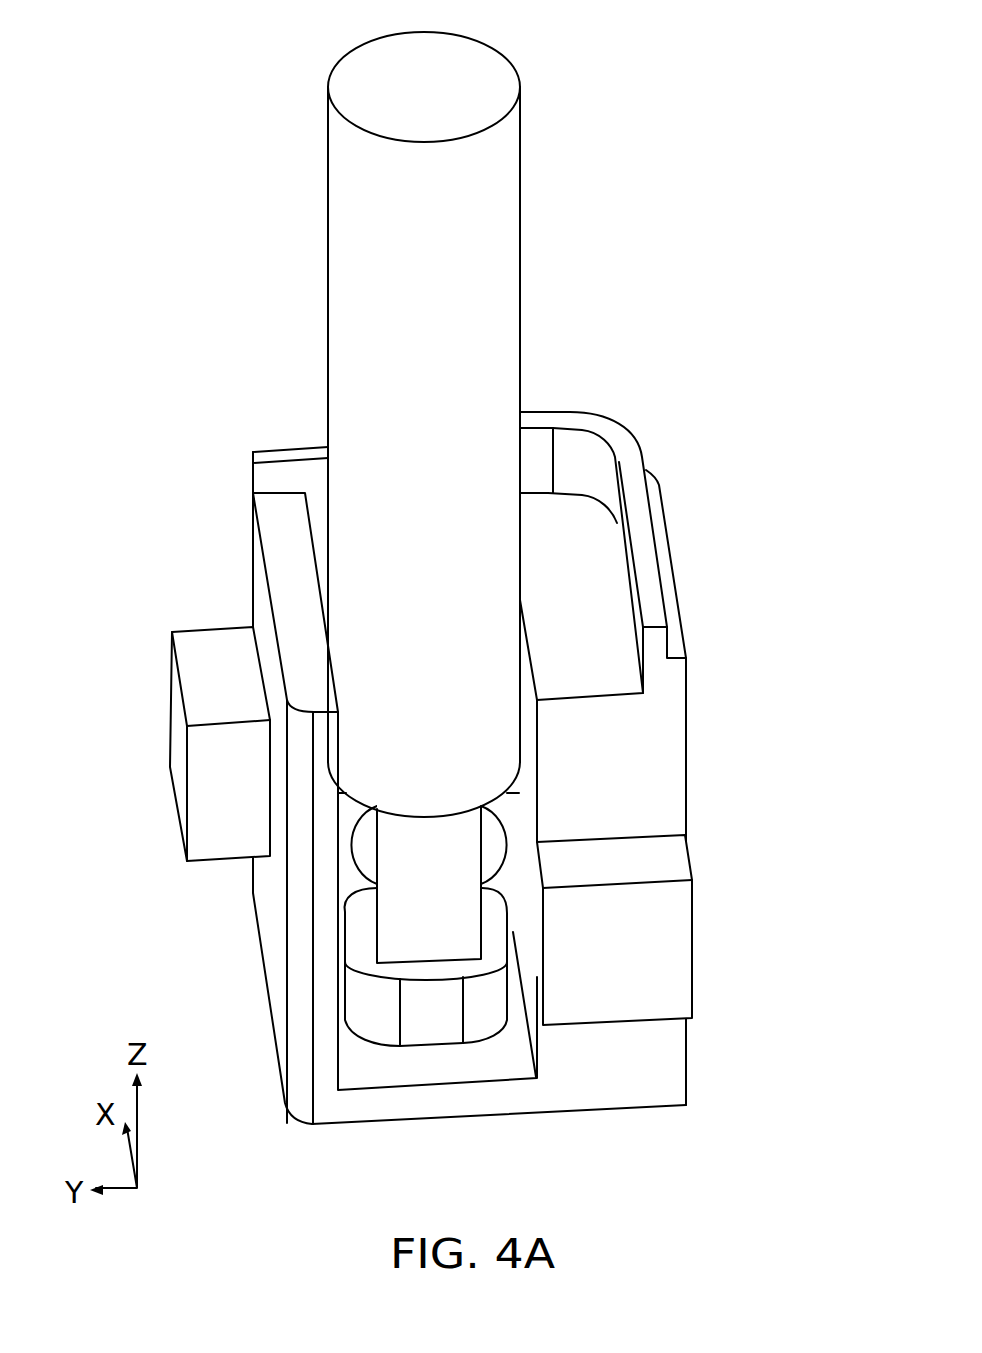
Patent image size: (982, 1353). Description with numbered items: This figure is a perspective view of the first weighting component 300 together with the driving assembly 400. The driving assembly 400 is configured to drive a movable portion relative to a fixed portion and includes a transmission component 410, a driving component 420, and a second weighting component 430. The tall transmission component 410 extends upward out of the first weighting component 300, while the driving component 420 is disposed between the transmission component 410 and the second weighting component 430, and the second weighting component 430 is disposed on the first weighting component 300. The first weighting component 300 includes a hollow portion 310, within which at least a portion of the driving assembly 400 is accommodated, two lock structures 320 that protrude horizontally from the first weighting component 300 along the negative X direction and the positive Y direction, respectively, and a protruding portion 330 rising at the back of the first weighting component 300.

The first weighting component 300 is at (705, 689).
The hollow portion 310 is at (503, 885).
The lock structures 320 is at (203, 690).
The protruding portion 330 is at (642, 535).
The driving assembly 400 is at (601, 551).
The transmission component 410 is at (502, 262).
The driving component 420 is at (448, 908).
The second weighting component 430 is at (488, 1005).